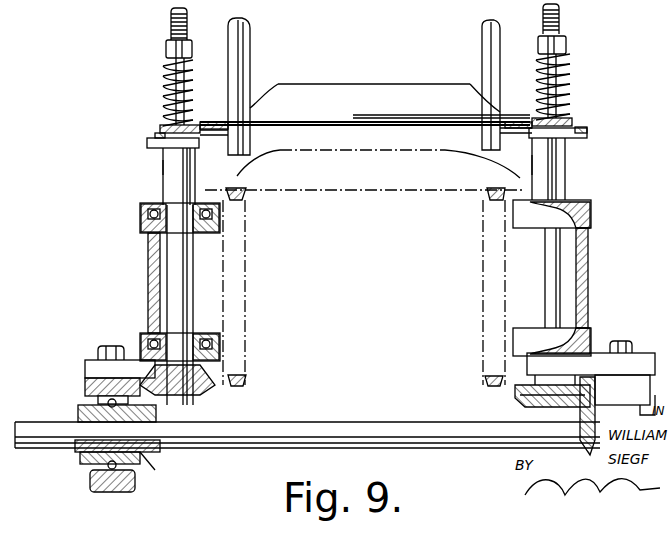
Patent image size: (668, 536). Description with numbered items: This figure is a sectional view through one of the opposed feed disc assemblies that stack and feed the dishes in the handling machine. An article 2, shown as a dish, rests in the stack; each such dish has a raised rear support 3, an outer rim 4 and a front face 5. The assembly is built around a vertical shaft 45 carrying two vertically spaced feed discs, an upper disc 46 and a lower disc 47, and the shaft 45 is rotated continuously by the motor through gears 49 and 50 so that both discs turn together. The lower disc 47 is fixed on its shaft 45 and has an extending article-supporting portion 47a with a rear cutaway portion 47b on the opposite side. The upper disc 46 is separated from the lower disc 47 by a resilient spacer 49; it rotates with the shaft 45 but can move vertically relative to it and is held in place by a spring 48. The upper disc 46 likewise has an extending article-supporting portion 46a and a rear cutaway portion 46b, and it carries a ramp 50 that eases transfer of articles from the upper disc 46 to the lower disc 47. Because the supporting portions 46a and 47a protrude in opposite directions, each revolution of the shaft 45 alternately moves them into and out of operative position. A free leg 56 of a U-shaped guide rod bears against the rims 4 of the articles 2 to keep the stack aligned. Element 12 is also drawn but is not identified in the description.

The article 2 is at (440, 95).
The raised rear support 3 is at (334, 84).
The outer rim 4 is at (530, 115).
The front face 5 is at (396, 124).
The rotor center line element 12 is at (244, 196).
The shaft 45 is at (185, 298).
The upper disc 46 is at (232, 136).
The article-supporting portion 46a is at (214, 120).
The rear cutaway portion 46b is at (160, 127).
The lower disc 47 is at (160, 150).
The article-supporting portion 47a is at (150, 142).
The rear cutaway portion 47b is at (240, 168).
The spring 48 is at (165, 92).
The resilient spacer 49 is at (155, 137).
The ramp 50 is at (150, 468).
The free leg 56 is at (248, 64).